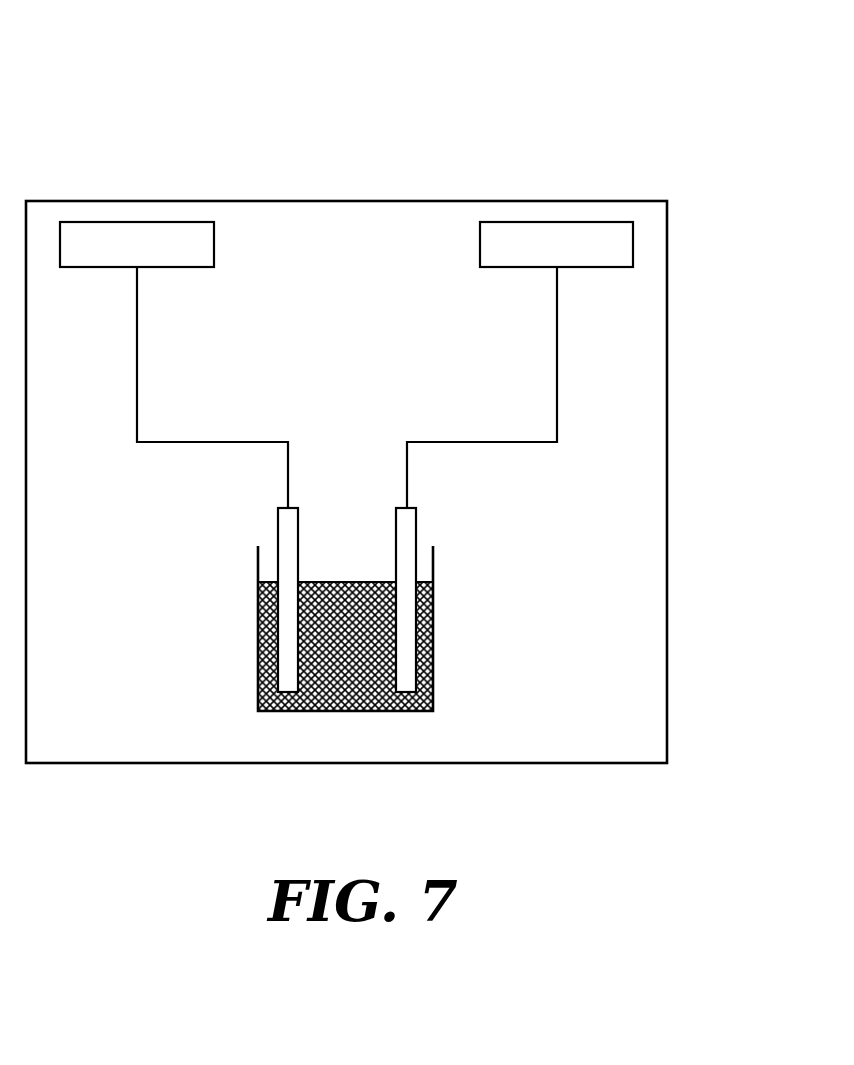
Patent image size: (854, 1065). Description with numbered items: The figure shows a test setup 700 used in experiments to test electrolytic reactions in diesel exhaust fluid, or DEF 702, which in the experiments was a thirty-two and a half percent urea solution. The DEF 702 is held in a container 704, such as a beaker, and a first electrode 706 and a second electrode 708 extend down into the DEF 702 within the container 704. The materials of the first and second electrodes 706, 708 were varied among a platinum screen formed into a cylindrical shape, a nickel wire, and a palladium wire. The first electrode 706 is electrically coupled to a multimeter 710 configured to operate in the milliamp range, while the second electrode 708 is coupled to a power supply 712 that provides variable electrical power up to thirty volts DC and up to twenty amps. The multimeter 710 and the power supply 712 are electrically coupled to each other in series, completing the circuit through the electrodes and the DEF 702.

The test setup 700 is at (652, 60).
The DEF 702 is at (338, 712).
The container 704 is at (434, 621).
The first electrode 706 is at (278, 520).
The second electrode 708 is at (417, 520).
The multimeter 710 is at (110, 222).
The power supply 712 is at (584, 222).